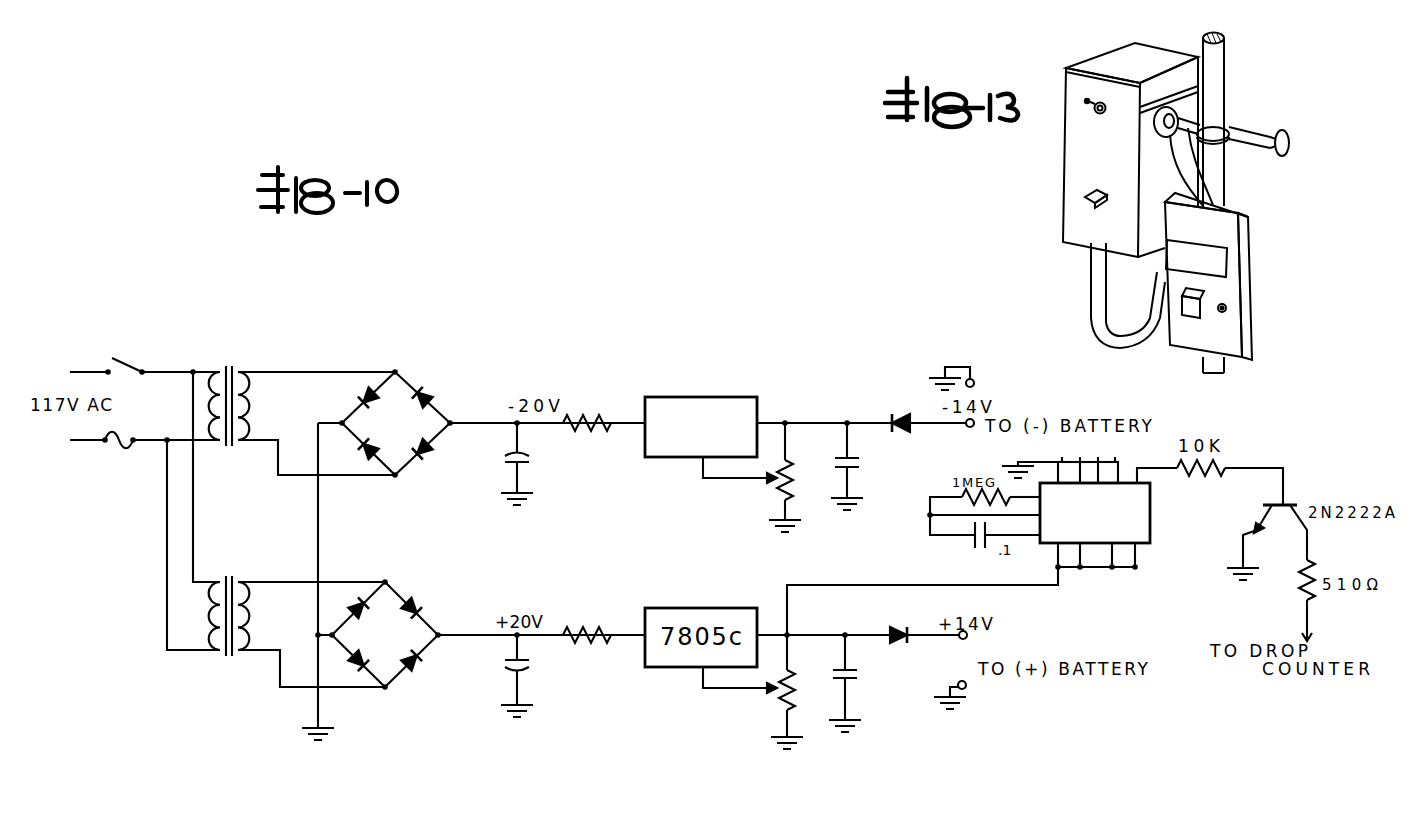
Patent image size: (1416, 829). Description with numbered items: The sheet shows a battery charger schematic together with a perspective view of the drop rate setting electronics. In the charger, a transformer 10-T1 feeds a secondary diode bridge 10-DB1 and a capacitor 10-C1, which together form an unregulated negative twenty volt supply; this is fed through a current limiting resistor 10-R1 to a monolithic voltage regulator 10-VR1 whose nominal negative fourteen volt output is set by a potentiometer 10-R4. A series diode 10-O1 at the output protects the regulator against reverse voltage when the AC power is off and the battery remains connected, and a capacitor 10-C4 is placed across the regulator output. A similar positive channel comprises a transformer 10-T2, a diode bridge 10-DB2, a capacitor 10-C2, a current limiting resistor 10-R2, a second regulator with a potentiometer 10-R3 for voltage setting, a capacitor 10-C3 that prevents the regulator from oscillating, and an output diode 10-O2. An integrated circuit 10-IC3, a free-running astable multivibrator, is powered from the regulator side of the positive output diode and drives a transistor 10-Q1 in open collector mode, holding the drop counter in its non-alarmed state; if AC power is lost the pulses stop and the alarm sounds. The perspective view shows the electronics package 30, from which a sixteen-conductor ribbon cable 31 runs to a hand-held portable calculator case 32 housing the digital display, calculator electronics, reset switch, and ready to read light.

In FIG. 10, the transformer 10-T1 is at (217, 391).
In FIG. 10, the transformer 10-T2 is at (244, 601).
In FIG. 10, the secondary diode bridge 10-DB1 is at (396, 413).
In FIG. 10, the diode bridge 10-DB2 is at (385, 622).
In FIG. 10, the current limiting resistor 10-R1 is at (593, 424).
In FIG. 10, the current limiting resistor 10-R2 is at (587, 640).
In FIG. 10, the potentiometer 10-R3 is at (741, 694).
In FIG. 10, the potentiometer 10-R4 is at (739, 487).
In FIG. 10, the capacitor 10-C1 is at (524, 464).
In FIG. 10, the capacitor 10-C2 is at (518, 676).
In FIG. 10, the capacitor 10-C3 is at (875, 683).
In FIG. 10, the capacitor 10-C4 is at (873, 466).
In FIG. 10, the voltage regulator 10-VR1 is at (701, 410).
In FIG. 10, the diode 10-O1 is at (914, 409).
In FIG. 10, the diode 10-O2 is at (907, 625).
In FIG. 10, the integrated circuit 10-IC3 is at (1115, 513).
In FIG. 10, the transistor 10-Q1 is at (1271, 573).
In FIG. 13, the electronics package 30 is at (1063, 142).
In FIG. 13, the ribbon cable 31 is at (1088, 296).
In FIG. 13, the hand-held portable calculator case 32 is at (1245, 238).